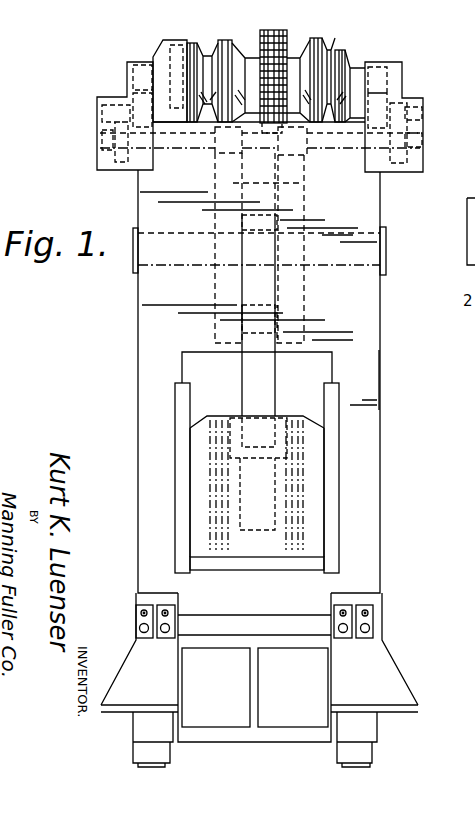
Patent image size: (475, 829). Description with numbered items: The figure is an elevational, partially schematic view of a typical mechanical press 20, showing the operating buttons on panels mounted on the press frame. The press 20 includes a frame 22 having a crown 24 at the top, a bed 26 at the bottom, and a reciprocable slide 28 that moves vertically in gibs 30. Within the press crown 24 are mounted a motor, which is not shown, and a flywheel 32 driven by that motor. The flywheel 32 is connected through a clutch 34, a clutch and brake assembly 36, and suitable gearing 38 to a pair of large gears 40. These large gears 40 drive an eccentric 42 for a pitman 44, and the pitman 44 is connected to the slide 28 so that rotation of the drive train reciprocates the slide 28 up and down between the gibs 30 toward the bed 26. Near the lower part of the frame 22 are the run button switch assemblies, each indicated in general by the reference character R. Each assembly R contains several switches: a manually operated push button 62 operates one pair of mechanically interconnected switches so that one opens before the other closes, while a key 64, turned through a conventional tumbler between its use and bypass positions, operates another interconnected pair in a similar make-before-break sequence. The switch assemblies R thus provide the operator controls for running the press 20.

The press 20 is at (385, 334).
The frame 22 is at (368, 378).
The crown 24 is at (177, 168).
The bed 26 is at (222, 715).
The slide 28 is at (310, 493).
The gibs 30 is at (335, 448).
The flywheel 32 is at (263, 30).
The clutch 34 is at (328, 43).
The clutch and brake assembly 36 is at (220, 43).
The gearing 38 is at (97, 122).
The large gears 40 is at (302, 182).
The eccentric 42 is at (242, 222).
The pitman 44 is at (250, 375).
The push button 62 is at (165, 633).
The key 64 is at (146, 612).
The run button switch assembly R is at (165, 604).